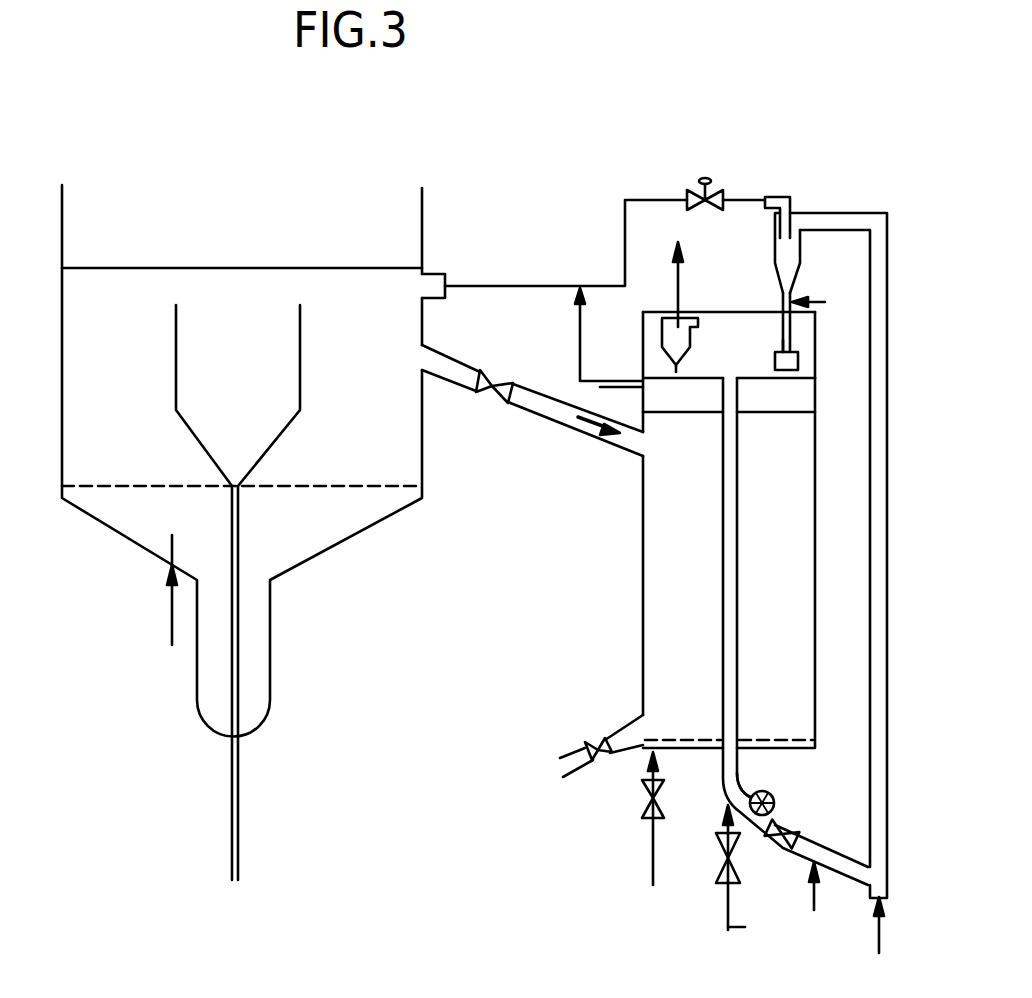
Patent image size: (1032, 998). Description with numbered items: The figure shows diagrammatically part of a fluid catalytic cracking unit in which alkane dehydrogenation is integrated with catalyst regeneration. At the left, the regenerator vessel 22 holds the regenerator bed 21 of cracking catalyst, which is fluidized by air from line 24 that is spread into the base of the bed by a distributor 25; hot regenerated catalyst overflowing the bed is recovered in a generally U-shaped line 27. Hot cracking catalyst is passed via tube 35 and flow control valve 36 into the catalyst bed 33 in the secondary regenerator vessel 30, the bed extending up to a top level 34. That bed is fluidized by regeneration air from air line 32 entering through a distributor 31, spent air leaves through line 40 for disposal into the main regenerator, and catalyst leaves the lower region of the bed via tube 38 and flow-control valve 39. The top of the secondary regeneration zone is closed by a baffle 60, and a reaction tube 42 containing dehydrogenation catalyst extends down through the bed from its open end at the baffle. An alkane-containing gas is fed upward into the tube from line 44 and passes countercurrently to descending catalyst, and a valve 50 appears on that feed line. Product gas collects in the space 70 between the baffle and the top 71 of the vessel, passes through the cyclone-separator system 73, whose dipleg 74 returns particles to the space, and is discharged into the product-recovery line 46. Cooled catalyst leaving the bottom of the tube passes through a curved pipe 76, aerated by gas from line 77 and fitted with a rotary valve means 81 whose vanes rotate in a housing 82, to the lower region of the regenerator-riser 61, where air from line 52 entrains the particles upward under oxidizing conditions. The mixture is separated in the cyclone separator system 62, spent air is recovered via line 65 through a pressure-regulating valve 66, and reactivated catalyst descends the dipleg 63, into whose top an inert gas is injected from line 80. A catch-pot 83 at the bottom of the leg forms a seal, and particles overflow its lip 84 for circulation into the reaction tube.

The regenerator bed 21 is at (216, 268).
The regenerator vessel 22 is at (424, 224).
The air line 24 is at (170, 598).
The distributor 25 is at (325, 490).
The U-shaped line 27 is at (240, 812).
The secondary regenerator vessel 30 is at (643, 505).
The distributor 31 is at (805, 755).
The air line 32 is at (648, 845).
The catalyst bed 33 is at (696, 526).
The top level 34 is at (805, 410).
The tube 35 is at (560, 425).
The flow control valve 36 is at (488, 393).
The tube 38 is at (583, 772).
The flow-control valve 39 is at (590, 740).
The line 40 is at (576, 315).
The reaction tube 42 is at (725, 603).
The line 44 is at (750, 933).
The product-recovery line 46 is at (675, 272).
The riser gas valve 50 is at (723, 851).
The line 52 is at (879, 953).
The baffle 60 is at (812, 380).
The regenerator-riser 61 is at (870, 637).
The cyclone separator system 62 is at (775, 240).
The dipleg 63 is at (794, 330).
The line 65 is at (620, 220).
The pressure-regulating valve 66 is at (697, 190).
The space 70 is at (741, 354).
The top 71 is at (702, 311).
The cyclone-separator system 73 is at (662, 328).
The dipleg 74 is at (676, 368).
The curved pipe 76 is at (808, 846).
The line 77 is at (814, 908).
The line 80 is at (820, 302).
The rotary valve means 81 is at (775, 798).
The housing 82 is at (770, 766).
The catch-pot 83 is at (775, 360).
The lip 84 is at (800, 356).